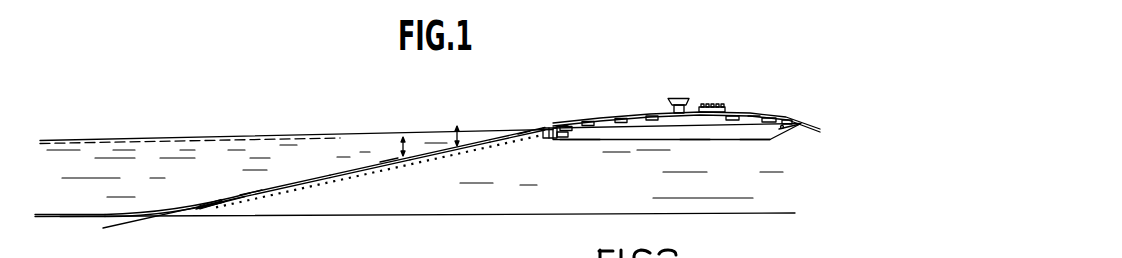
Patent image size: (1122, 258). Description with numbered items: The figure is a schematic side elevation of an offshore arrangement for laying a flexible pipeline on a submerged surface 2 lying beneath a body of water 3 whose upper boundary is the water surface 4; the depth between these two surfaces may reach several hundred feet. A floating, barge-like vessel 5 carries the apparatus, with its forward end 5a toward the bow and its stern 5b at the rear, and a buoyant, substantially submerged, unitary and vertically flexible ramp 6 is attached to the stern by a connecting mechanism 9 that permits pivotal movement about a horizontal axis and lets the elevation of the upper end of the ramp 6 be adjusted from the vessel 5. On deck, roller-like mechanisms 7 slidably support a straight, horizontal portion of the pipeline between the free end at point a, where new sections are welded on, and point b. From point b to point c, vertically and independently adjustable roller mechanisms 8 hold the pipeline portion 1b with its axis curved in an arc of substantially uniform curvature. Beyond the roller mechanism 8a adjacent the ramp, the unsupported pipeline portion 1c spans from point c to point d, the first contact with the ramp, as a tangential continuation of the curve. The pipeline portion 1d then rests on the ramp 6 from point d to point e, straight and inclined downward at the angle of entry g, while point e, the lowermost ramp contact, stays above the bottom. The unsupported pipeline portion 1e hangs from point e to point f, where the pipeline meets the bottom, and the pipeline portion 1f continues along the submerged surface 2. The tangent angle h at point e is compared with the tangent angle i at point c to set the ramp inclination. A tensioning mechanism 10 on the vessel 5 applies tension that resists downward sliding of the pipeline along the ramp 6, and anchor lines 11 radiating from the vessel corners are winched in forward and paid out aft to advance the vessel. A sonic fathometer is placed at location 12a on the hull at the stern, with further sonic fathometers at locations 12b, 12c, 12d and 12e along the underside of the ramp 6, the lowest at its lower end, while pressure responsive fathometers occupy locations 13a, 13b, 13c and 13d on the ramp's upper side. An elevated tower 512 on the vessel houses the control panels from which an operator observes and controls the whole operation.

The pipeline portion 1b is at (617, 119).
The pipeline portion 1c is at (523, 137).
The pipeline portion 1d is at (249, 199).
The pipeline portion 1e is at (141, 211).
The pipeline portion 1f is at (51, 214).
The submerged surface 2 is at (447, 215).
The body of water 3 is at (342, 157).
The water surface 4 is at (184, 139).
The floating vessel 5 is at (720, 132).
The forward end of the vessel 5a is at (758, 132).
The stern of the vessel 5b is at (578, 136).
The ramp 6 is at (395, 165).
The roller-like mechanisms 7 is at (772, 113).
The adjustable roller mechanisms 8 is at (620, 133).
The roller mechanism adjacent the ramp 8a is at (570, 124).
The connecting mechanism 9 is at (576, 223).
The tensioning mechanism 10 is at (720, 107).
The anchor lines 11 is at (800, 138).
The sonic fathometer location 12a is at (556, 138).
The sonic fathometer location 12b is at (458, 152).
The sonic fathometer location 12c is at (373, 182).
The sonic fathometer location 12d is at (296, 192).
The sonic fathometer location 12e is at (204, 211).
The pressure responsive fathometer location 13a is at (457, 146).
The pressure responsive fathometer location 13b is at (372, 176).
The pressure responsive fathometer location 13c is at (286, 184).
The pressure responsive fathometer location 13d is at (207, 202).
The elevated tower 512 is at (674, 100).
The point a is at (794, 113).
The point b is at (697, 127).
The point c is at (563, 127).
The point d is at (524, 141).
The point e is at (206, 203).
The point f is at (78, 218).
The angle of entry g is at (411, 136).
The tangent angle h is at (182, 215).
The tangent angle i is at (458, 126).